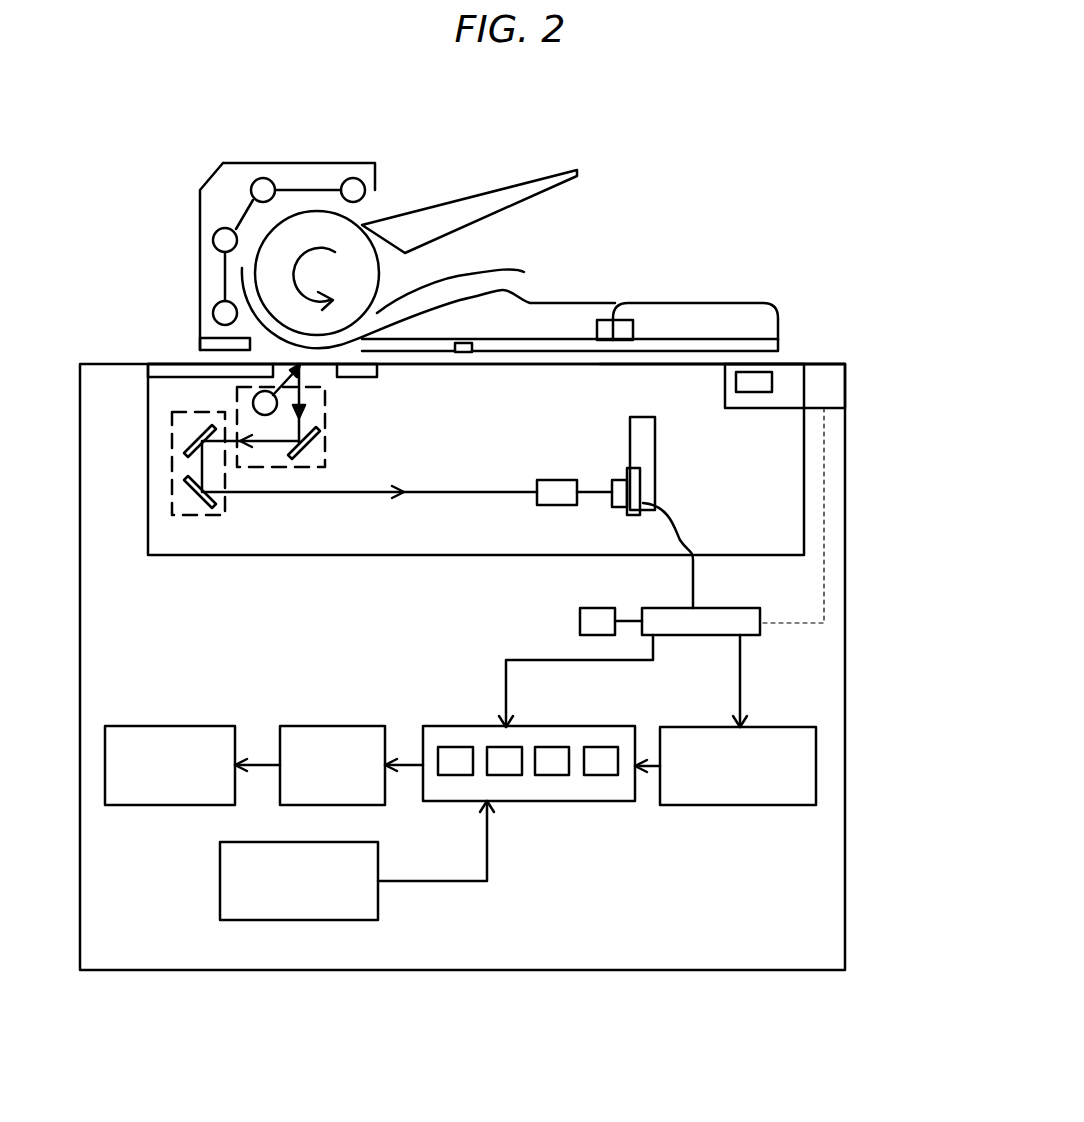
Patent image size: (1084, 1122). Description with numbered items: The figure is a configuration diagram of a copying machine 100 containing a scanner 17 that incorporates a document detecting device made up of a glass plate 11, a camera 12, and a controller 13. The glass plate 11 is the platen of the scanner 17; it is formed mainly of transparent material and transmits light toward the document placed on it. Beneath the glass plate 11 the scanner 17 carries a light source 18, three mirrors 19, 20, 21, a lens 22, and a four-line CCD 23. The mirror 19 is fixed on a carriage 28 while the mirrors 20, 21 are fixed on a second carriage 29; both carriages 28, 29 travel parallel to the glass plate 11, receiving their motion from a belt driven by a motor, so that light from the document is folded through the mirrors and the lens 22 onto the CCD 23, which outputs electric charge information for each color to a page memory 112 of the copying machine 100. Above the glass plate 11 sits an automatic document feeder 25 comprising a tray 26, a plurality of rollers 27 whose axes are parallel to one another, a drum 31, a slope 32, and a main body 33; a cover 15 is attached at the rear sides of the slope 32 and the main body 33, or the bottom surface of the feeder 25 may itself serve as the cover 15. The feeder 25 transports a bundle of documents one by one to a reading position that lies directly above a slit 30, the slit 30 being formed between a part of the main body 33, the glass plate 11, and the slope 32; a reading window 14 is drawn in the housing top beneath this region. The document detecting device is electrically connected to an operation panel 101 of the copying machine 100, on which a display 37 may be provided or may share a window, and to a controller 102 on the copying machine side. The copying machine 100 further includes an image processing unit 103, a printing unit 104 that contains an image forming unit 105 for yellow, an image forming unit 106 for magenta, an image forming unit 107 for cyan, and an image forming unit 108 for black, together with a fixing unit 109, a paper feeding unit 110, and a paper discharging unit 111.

The glass plate 11 is at (478, 356).
The camera 12 is at (520, 298).
The controller 13 is at (616, 303).
The reading window 14 is at (405, 364).
The cover 15 is at (200, 344).
The scanner 17 is at (804, 500).
The light source 18 is at (257, 398).
The mirror 19 is at (316, 462).
The mirror 20 is at (190, 442).
The mirror 21 is at (213, 508).
The lens 22 is at (554, 480).
The 4-line CCD 23 is at (628, 456).
The automatic document feeder 25 is at (502, 260).
The tray 26 is at (532, 178).
The rollers 27 is at (262, 178).
The carriage 28 is at (323, 467).
The carriage 29 is at (158, 509).
The slit 30 is at (318, 370).
The drum 31 is at (314, 225).
The slope 32 is at (743, 302).
The main body 33 is at (222, 164).
The display 37 is at (752, 382).
The copying machine 100 is at (510, 997).
The operation panel 101 is at (832, 393).
The controller 102 is at (728, 620).
The image processing unit 103 is at (756, 727).
The printing unit 104 is at (527, 804).
The image forming unit for yellow 105 is at (457, 776).
The image forming unit for magenta 106 is at (509, 757).
The image forming unit for cyan 107 is at (556, 765).
The image forming unit for black 108 is at (604, 765).
The fixing unit 109 is at (363, 726).
The paper feeding unit 110 is at (220, 868).
The paper discharging unit 111 is at (198, 726).
The page memory 112 is at (580, 621).